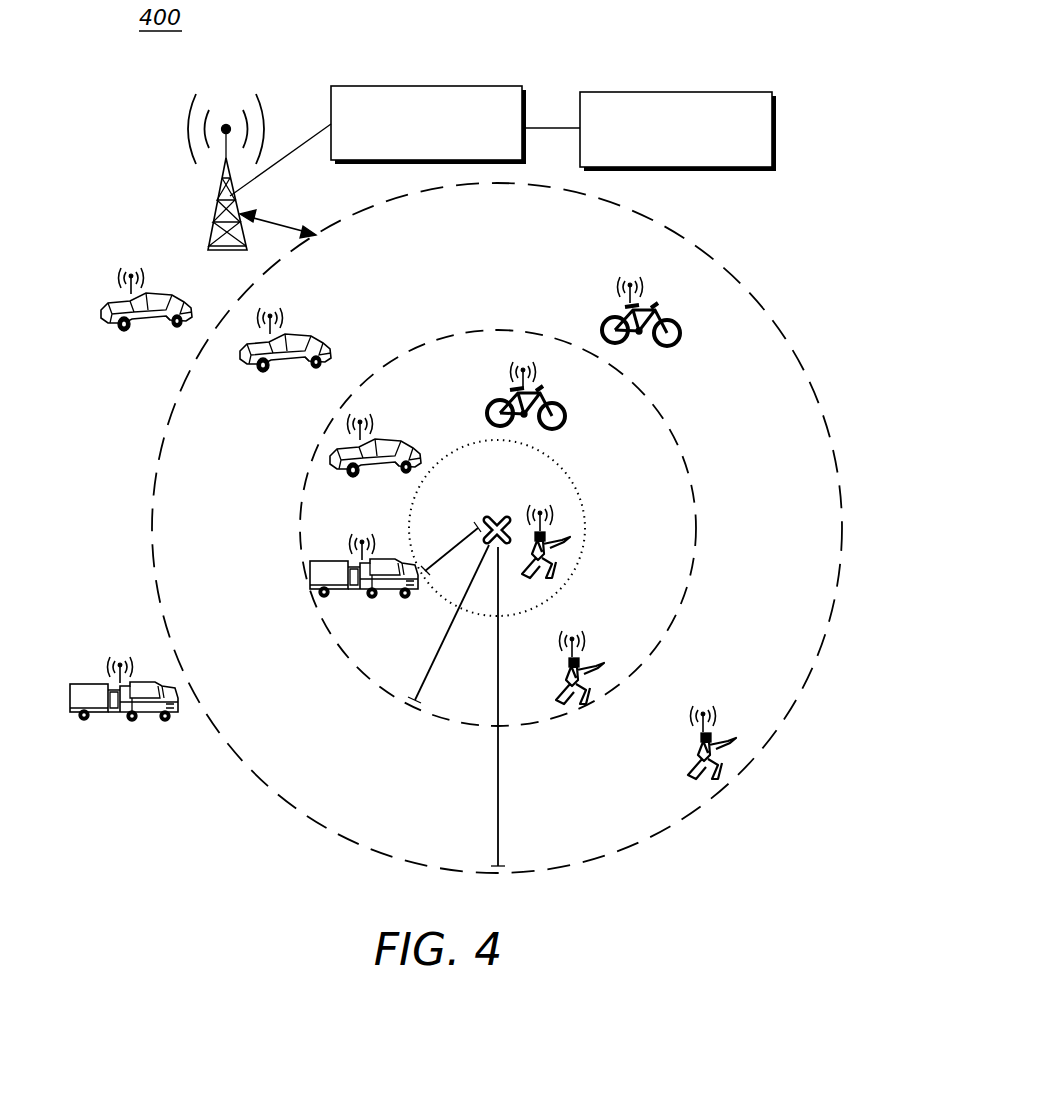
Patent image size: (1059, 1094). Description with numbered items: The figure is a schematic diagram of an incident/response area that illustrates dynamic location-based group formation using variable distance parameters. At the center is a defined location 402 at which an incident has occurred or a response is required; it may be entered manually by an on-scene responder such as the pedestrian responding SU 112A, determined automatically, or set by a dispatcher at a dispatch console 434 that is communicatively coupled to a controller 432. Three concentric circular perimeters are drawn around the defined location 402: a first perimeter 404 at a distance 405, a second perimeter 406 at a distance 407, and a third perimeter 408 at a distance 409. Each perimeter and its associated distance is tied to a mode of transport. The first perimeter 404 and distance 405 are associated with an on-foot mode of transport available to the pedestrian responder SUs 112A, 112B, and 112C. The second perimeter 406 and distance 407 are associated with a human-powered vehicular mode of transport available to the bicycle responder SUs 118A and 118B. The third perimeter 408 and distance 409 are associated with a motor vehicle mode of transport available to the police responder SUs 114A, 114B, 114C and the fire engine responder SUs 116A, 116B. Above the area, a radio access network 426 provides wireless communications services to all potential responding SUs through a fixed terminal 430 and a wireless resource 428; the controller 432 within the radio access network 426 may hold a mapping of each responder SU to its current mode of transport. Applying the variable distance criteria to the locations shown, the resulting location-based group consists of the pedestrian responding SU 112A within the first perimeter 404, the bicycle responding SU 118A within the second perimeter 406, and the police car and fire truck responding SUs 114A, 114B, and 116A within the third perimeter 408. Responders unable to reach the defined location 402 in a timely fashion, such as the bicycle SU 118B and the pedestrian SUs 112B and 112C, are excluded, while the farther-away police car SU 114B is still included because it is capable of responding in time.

The radio access network (RAN) 426 is at (146, 129).
The fixed terminal 430 is at (216, 204).
The wireless resource 428 is at (272, 222).
The controller 432 is at (427, 86).
The dispatch console 434 is at (676, 92).
The third perimeter 408 is at (779, 330).
The second perimeter 406 is at (698, 538).
The first perimeter 404 is at (586, 516).
The defined location 402 is at (497, 518).
The distance 405 is at (455, 540).
The distance 407 is at (453, 626).
The distance 409 is at (498, 796).
The police responder SU 114A is at (354, 476).
The police responder SU 114B is at (264, 371).
The police responder SU 114C is at (127, 330).
The fire engine responder SU 116A is at (392, 598).
The fire engine responder SU 116B is at (122, 725).
The human-powered vehicle responder SU 118A is at (570, 424).
The human-powered vehicle responder SU 118B is at (684, 338).
The pedestrian responder SU 112A is at (560, 570).
The pedestrian responder SU 112B is at (590, 690).
The pedestrian responder SU 112C is at (684, 776).